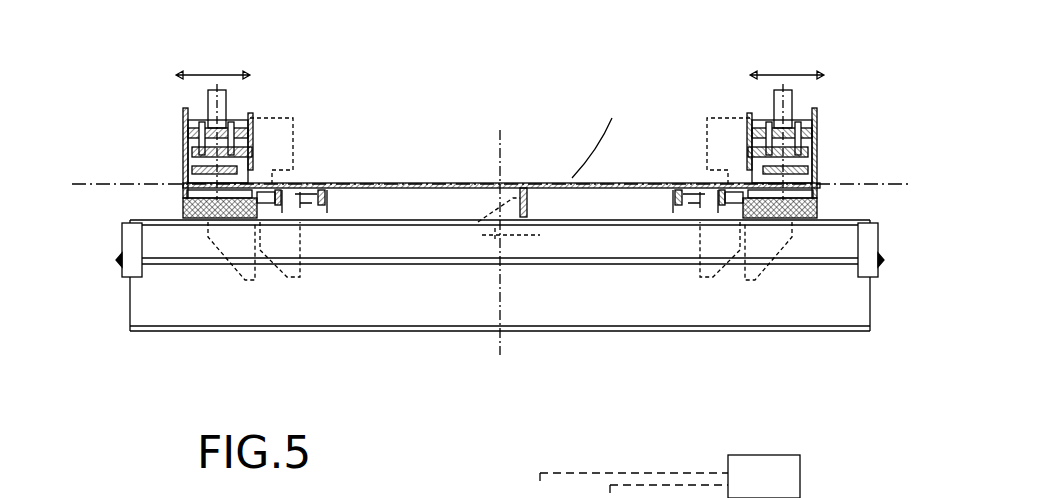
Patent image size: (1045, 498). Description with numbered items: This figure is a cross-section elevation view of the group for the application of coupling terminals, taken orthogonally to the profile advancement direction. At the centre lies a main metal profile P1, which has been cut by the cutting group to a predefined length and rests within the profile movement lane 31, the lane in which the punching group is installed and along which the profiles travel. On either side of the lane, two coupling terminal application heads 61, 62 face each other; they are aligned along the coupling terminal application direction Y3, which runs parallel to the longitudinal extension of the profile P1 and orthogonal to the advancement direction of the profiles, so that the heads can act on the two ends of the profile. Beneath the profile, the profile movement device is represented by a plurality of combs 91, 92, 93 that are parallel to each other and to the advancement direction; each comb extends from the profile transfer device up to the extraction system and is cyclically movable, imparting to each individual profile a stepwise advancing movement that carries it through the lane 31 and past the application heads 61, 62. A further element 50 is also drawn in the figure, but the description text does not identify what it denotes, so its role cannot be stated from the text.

The profile movement lane 31 is at (453, 174).
The main metal profile P1 is at (612, 118).
The coupling terminal application direction Y3 is at (486, 187).
The coupling terminal application head 61 is at (162, 128).
The coupling terminal application head 62 is at (832, 104).
The comb 91 is at (318, 226).
The comb 92 is at (522, 240).
The comb 93 is at (676, 226).
The controller 50 is at (670, 476).